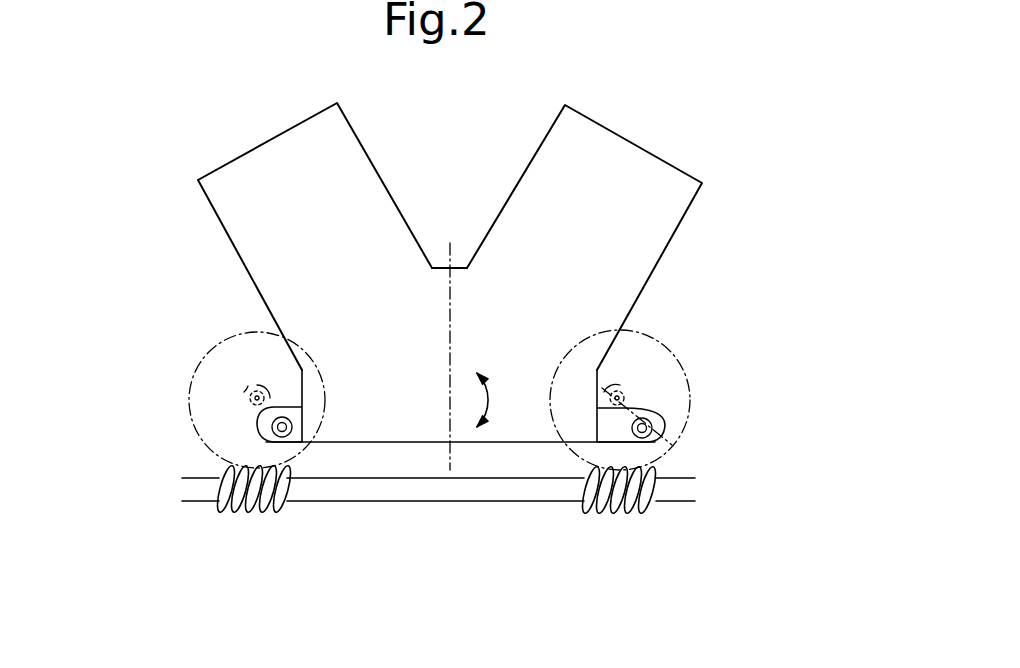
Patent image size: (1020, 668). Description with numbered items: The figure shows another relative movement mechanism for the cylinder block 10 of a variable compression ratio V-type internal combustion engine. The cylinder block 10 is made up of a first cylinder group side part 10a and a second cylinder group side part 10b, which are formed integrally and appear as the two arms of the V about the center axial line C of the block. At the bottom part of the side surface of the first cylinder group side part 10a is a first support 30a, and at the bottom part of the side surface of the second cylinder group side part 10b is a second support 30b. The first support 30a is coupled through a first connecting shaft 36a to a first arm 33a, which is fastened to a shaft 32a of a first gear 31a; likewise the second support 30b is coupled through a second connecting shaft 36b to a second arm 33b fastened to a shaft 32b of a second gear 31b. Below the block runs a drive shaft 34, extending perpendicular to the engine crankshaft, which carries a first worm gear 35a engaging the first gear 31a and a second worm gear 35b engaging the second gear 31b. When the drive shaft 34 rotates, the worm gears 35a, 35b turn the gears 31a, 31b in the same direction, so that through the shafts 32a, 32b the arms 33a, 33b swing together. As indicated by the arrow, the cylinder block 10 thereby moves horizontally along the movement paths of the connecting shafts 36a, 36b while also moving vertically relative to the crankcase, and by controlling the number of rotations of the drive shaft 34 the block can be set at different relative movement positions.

The cylinder block 10 is at (455, 228).
The first cylinder group side part 10a is at (283, 162).
The second cylinder group side part 10b is at (623, 163).
The first support 30a is at (306, 455).
The second support 30b is at (657, 417).
The first gear 31a is at (190, 383).
The second gear 31b is at (663, 343).
The shaft of first gear 32a is at (252, 392).
The shaft of second gear 32b is at (623, 390).
The first arm 33a is at (247, 410).
The second arm 33b is at (690, 430).
The drive shaft 34 is at (538, 490).
The first worm gear 35a is at (270, 510).
The second worm gear 35b is at (627, 507).
The first connecting shaft 36a is at (282, 432).
The second connecting shaft 36b is at (660, 447).
The center axial line C is at (450, 453).